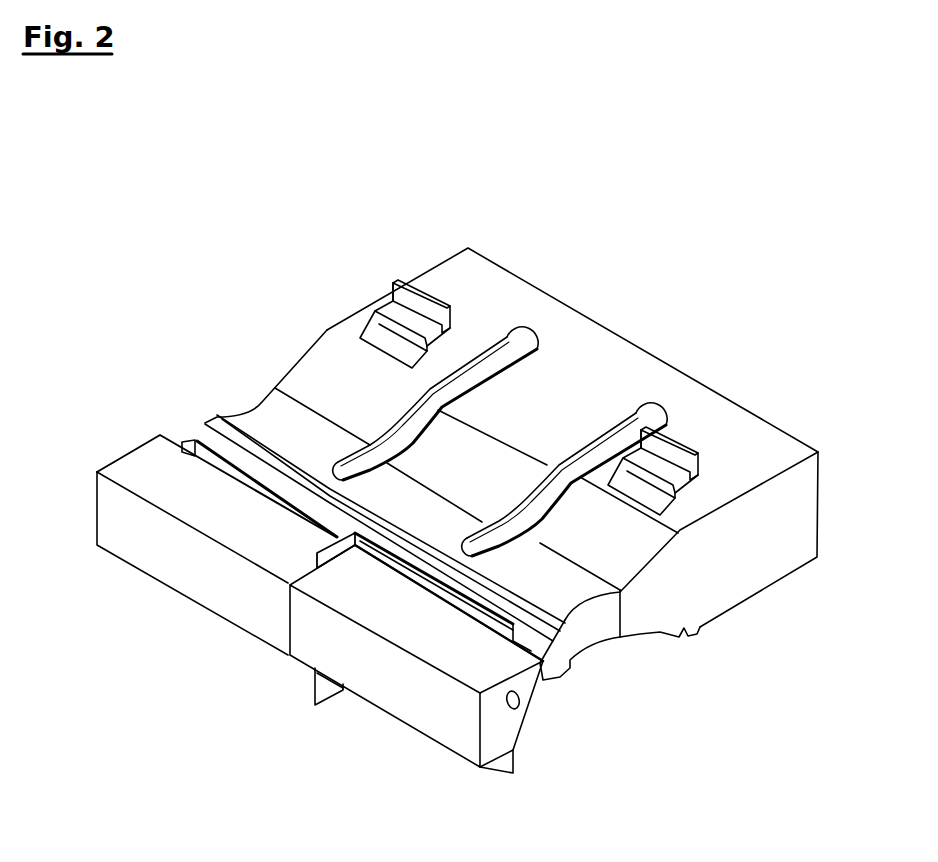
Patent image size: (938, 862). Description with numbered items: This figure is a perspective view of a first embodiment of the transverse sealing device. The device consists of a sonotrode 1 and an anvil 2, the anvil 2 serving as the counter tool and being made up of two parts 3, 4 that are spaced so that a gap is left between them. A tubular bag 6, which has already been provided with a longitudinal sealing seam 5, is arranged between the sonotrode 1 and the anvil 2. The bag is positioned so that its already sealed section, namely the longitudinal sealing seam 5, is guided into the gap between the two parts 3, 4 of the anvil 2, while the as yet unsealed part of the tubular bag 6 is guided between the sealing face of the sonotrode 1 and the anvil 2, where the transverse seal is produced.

The sonotrode 1 is at (447, 257).
The anvil 2 is at (320, 633).
The first part of the anvil 3 is at (120, 528).
The second part of the anvil 4 is at (412, 702).
The longitudinal sealing seam 5 is at (330, 535).
The tubular bag 6 is at (203, 425).